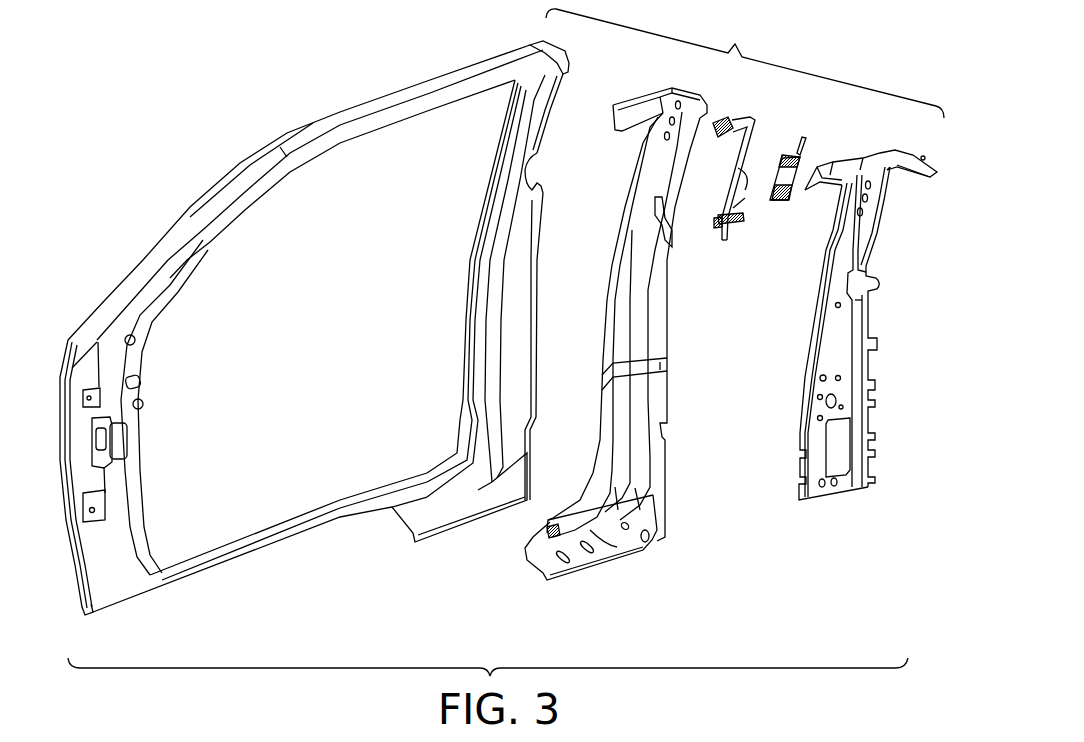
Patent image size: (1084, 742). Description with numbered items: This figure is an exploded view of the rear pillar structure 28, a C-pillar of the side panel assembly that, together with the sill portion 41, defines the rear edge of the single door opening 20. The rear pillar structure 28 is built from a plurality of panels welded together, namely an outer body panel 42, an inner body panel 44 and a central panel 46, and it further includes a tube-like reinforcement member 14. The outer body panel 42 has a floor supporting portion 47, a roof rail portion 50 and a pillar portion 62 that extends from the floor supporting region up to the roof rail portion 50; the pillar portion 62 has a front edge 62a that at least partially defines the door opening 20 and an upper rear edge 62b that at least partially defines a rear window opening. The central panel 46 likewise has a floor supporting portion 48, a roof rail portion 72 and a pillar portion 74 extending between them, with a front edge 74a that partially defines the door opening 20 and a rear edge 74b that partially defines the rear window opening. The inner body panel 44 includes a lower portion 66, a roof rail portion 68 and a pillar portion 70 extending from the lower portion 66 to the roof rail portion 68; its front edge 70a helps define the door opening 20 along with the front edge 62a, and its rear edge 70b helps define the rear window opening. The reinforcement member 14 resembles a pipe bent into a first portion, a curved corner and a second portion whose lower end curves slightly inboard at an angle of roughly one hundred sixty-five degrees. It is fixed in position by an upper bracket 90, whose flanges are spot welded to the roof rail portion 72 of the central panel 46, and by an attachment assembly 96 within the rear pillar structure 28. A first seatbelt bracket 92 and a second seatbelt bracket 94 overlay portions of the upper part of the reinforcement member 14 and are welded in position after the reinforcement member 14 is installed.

The reinforcement member 14 is at (756, 181).
The door opening 20 is at (158, 430).
The rear pillar structure 28 is at (745, 63).
The sill portion 41 is at (265, 543).
The outer body panel 42 is at (563, 52).
The inner body panel 44 is at (865, 172).
The central panel 46 is at (692, 105).
The floor supporting portion 47 is at (425, 512).
The floor supporting portion 48 is at (543, 557).
The roof rail portion 50 is at (427, 100).
The pillar portion 62 is at (487, 323).
The front edge 62a is at (467, 290).
The upper rear edge 62b is at (547, 127).
The lower portion 66 is at (830, 497).
The roof rail portion 68 is at (905, 157).
The pillar portion 70 is at (843, 331).
The front edge 70a is at (813, 330).
The rear edge 70b is at (878, 222).
The roof rail portion 72 is at (630, 103).
The pillar portion 74 is at (617, 341).
The front edge 74a is at (607, 262).
The rear edge 74b is at (667, 326).
The upper bracket 90 is at (677, 160).
The first seatbelt bracket 92 is at (802, 150).
The second seatbelt bracket 94 is at (788, 200).
The attachment assembly 96 is at (720, 225).